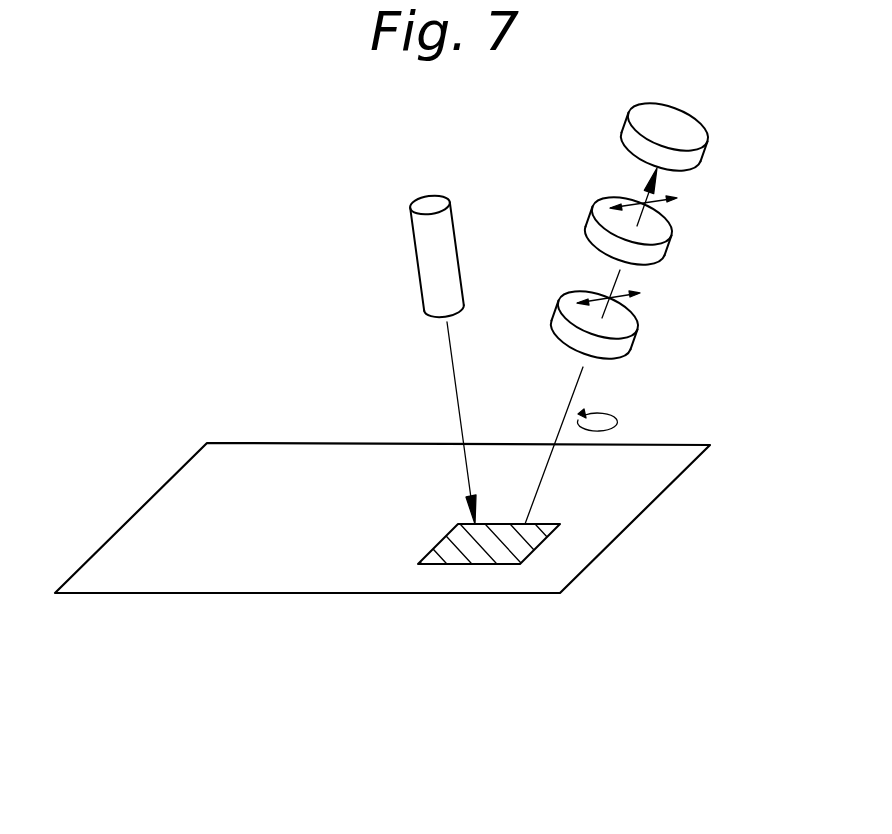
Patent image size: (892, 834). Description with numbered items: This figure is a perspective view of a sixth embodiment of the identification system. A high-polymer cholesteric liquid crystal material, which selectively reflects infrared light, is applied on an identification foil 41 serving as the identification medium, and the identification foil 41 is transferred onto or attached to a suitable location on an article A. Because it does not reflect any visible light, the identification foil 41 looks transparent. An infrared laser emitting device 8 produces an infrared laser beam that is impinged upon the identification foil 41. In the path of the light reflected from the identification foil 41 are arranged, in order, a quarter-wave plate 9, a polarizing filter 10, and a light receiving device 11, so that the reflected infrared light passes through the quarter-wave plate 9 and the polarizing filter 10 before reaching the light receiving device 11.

The infrared laser emitting device 8 is at (447, 262).
The quarter-wave plate 9 is at (627, 347).
The polarizing filter 10 is at (663, 248).
The light receiving device 11 is at (700, 155).
The identification foil 41 is at (462, 560).
The article A is at (612, 523).